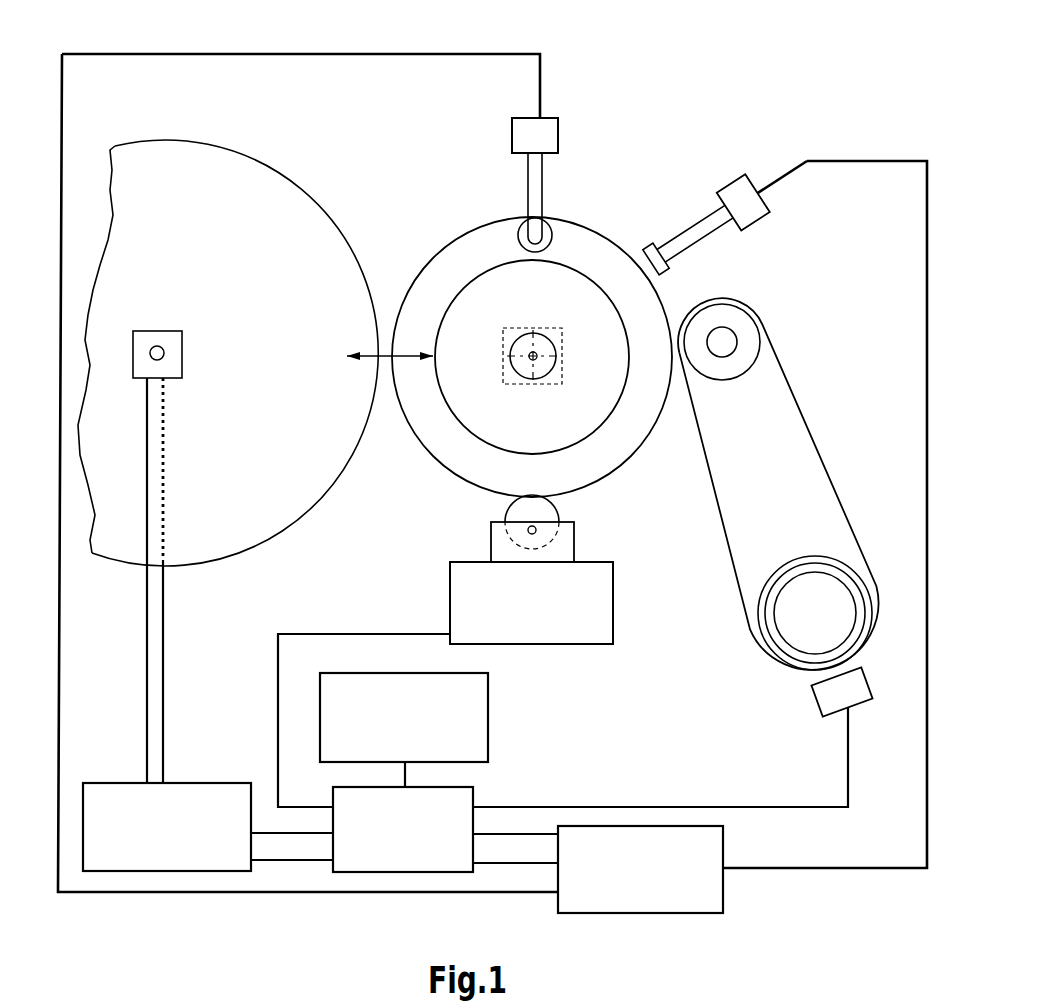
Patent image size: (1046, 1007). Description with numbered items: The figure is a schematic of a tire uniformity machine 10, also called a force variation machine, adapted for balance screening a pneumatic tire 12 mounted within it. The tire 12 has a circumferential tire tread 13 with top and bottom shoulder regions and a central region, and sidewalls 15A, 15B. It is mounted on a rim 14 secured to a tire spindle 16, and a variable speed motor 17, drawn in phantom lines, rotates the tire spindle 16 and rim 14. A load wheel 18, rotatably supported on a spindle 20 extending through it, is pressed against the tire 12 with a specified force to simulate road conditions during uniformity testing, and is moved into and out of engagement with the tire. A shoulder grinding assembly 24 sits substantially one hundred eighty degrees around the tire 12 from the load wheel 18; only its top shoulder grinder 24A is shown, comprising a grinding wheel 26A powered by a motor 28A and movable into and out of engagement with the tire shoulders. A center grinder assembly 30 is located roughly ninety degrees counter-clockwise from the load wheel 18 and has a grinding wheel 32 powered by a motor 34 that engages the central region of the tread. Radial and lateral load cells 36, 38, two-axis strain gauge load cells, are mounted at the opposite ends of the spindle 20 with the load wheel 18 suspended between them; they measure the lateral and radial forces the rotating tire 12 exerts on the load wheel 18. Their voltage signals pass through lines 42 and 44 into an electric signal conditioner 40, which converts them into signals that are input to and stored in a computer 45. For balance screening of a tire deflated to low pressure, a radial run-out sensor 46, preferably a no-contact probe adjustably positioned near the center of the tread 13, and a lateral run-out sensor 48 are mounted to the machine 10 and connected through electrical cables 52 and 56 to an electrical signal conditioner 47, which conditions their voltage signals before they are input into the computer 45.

The tire uniformity machine 10 is at (756, 265).
The tire 12 is at (666, 282).
The circumferential tire tread 13 is at (502, 218).
The rim 14 is at (458, 420).
The sidewall 15A is at (463, 262).
The sidewall 15B is at (603, 448).
The tire spindle 16 is at (538, 352).
The variable speed motor 17 is at (505, 335).
The load wheel 18 is at (238, 152).
The spindle 20 is at (151, 352).
The shoulder grinding assembly 24 is at (823, 428).
The top shoulder grinder 24A is at (784, 372).
The grinding wheel 26A is at (740, 310).
The motor 28A is at (835, 618).
The center grinder assembly 30 is at (446, 566).
The grinding wheel 32 is at (512, 522).
The motor 34 is at (543, 630).
The radial and lateral load cell 36 is at (160, 326).
The radial and lateral load cell 38 is at (178, 362).
The electric signal conditioner 40 is at (488, 718).
The line 42 is at (146, 648).
The line 44 is at (164, 672).
The computer 45 is at (474, 793).
The radial run-out sensor 46 is at (728, 187).
The electrical signal conditioner 47 is at (725, 905).
The lateral run-out sensor 48 is at (558, 140).
The electrical cable 52 is at (850, 161).
The electrical cable 56 is at (137, 56).